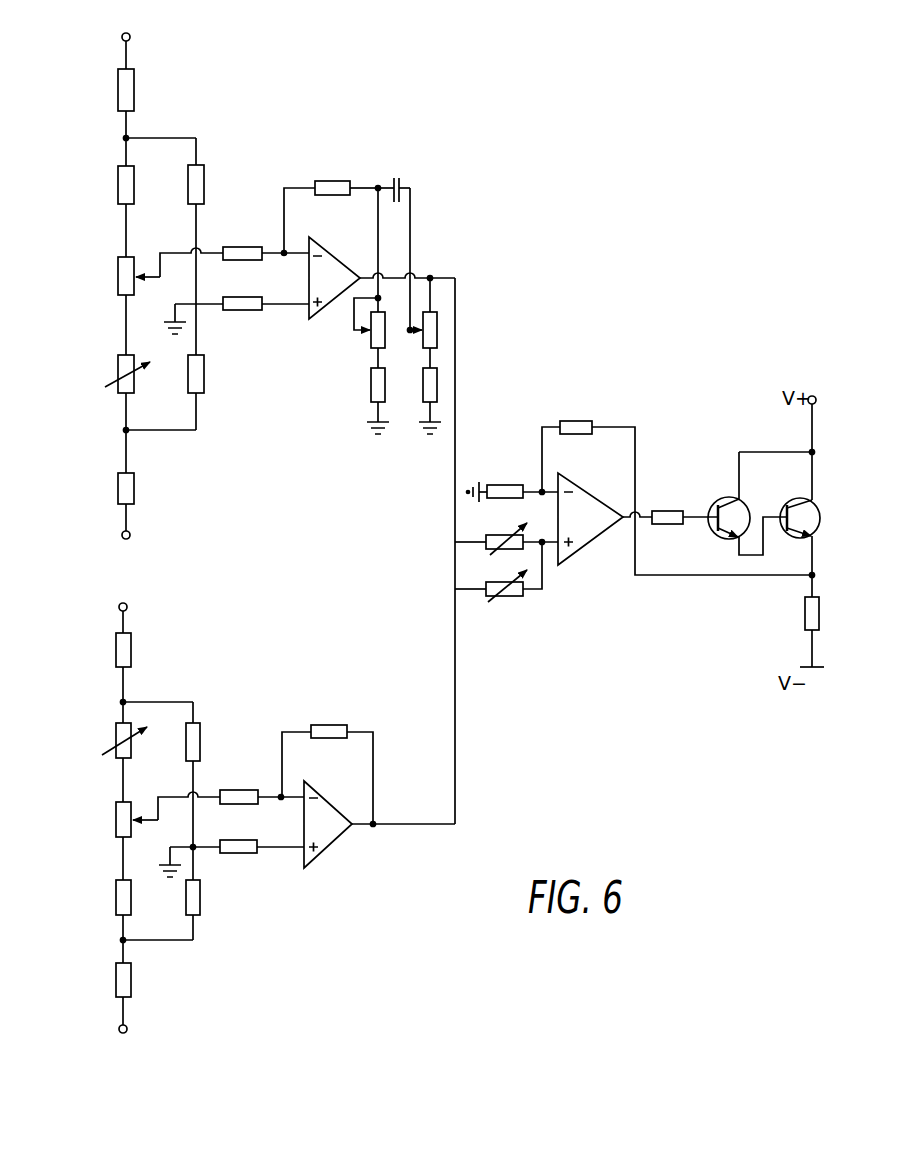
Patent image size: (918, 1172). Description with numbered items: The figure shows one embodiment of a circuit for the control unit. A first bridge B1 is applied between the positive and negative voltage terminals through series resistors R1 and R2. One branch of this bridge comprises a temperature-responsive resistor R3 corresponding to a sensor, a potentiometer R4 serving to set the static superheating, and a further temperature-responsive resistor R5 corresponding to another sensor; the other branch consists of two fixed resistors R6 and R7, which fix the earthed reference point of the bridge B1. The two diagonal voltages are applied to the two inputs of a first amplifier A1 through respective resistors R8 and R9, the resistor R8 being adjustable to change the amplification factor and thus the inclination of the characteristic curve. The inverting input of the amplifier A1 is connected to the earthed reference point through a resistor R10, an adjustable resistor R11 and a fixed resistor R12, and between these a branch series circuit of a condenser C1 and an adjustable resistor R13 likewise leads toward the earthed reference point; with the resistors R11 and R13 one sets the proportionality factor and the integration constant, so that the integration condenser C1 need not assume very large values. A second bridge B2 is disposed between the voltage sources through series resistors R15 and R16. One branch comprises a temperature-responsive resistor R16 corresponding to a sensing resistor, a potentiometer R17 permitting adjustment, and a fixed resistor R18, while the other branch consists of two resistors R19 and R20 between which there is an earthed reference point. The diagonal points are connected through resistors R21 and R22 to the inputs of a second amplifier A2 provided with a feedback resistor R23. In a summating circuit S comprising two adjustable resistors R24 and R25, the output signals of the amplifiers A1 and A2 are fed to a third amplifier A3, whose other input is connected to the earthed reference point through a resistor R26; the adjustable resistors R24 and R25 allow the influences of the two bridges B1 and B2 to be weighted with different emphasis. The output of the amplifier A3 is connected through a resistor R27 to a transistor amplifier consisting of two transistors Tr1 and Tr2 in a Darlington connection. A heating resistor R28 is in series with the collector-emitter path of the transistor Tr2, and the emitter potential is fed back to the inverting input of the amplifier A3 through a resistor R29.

The series resistor R1 is at (111, 90).
The series resistor R2 is at (110, 488).
The temperature-responsive resistor R3 is at (111, 185).
The potentiometer R4 is at (155, 271).
The temperature responsive resistor R5 is at (118, 374).
The fixed resistor R6 is at (210, 184).
The fixed resistor R7 is at (210, 374).
The resistor R8 is at (266, 242).
The resistor R9 is at (242, 317).
The resistor R10 is at (331, 205).
The adjustable resistor R11 is at (361, 326).
The fixed resistor R12 is at (361, 391).
The adjustable resistor R13 is at (438, 330).
The series resistor R15 is at (108, 650).
The temperature responsive resistor R16 is at (113, 858).
The potentiometer R17 is at (150, 814).
The fixed resistor R18 is at (105, 897).
The resistor R19 is at (214, 742).
The resistor R20 is at (214, 897).
The resistor R21 is at (262, 786).
The resistor R22 is at (237, 861).
The feedback resistor R23 is at (327, 763).
The adjustable resistor R24 is at (506, 536).
The adjustable resistor R25 is at (498, 585).
The resistor R26 is at (513, 484).
The resistor R27 is at (684, 506).
The heating resistor R28 is at (796, 632).
The resistor R29 is at (677, 486).
The condenser C1 is at (394, 179).
The first amplifier A1 is at (334, 278).
The second amplifier A2 is at (328, 824).
The third amplifier A3 is at (590, 519).
The first bridge B1 is at (172, 226).
The second bridge B2 is at (168, 774).
The transistor Tr1 is at (742, 514).
The transistor Tr2 is at (797, 535).
The summating circuit S is at (458, 577).